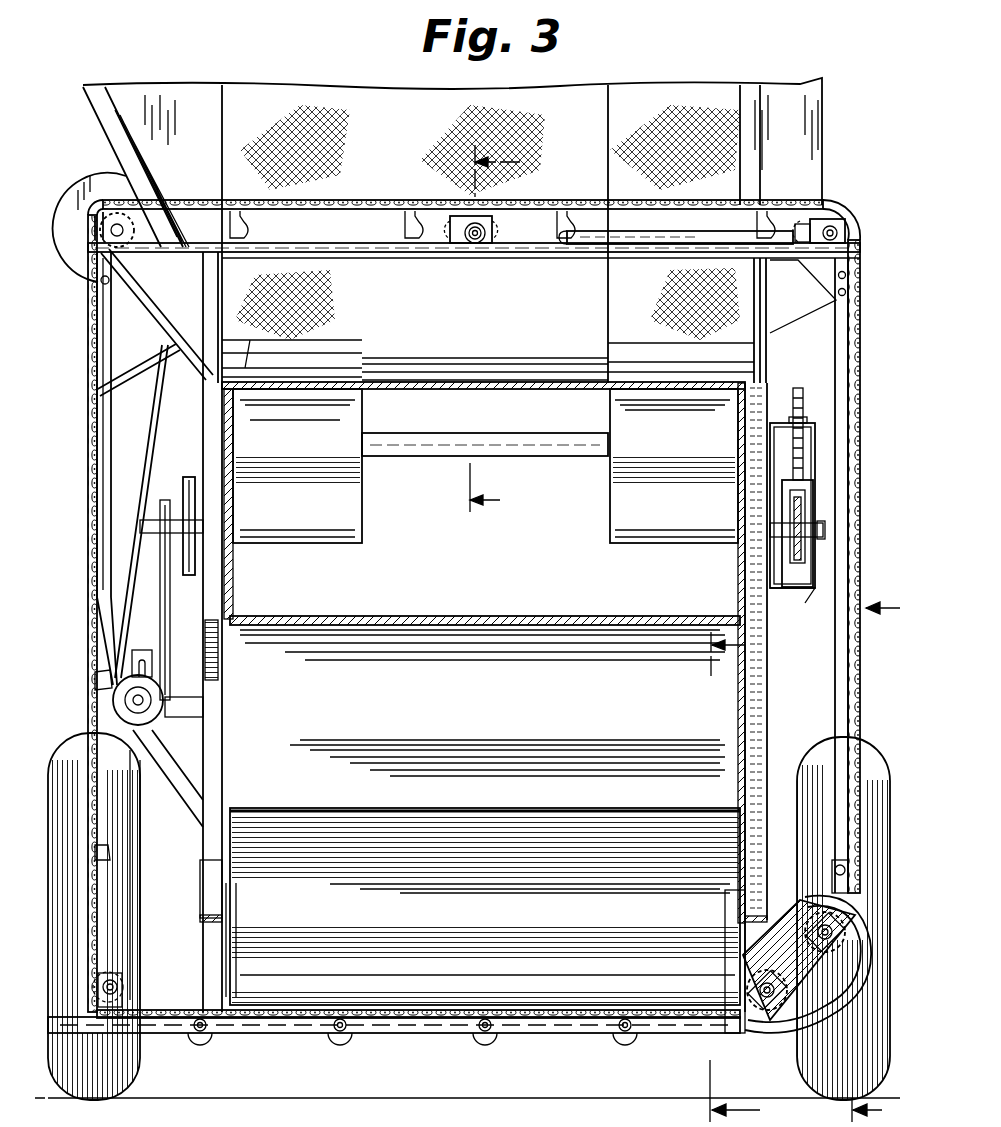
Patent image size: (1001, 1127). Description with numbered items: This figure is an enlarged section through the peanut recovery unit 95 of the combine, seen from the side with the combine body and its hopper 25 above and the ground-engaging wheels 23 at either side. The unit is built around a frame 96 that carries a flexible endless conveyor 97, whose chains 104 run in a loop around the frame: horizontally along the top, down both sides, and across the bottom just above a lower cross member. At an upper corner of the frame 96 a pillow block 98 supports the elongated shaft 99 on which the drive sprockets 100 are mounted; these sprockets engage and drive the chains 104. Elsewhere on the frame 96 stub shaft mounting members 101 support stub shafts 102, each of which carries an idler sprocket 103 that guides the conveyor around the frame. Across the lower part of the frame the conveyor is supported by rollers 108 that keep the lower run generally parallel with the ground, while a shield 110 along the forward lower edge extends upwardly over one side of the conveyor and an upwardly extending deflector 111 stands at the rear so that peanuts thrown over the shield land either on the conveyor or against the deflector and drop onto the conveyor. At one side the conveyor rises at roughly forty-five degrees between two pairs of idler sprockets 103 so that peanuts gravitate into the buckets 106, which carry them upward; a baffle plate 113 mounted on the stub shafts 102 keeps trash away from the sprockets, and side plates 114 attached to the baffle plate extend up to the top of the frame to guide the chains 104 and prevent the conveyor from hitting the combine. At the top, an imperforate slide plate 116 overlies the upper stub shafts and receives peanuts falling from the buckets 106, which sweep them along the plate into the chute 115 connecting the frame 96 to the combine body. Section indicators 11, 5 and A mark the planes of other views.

The hopper 25 is at (306, 100).
The endless conveyor 97 is at (377, 177).
The peanut recovery unit 95 is at (82, 548).
The frame 96 is at (386, 260).
The pillow blocks 98 is at (98, 208).
The shaft 99 is at (110, 203).
The drive sprockets 100 is at (155, 196).
The chains 104 is at (100, 443).
The buckets 106 is at (400, 222).
The idler sprockets 103 is at (495, 245).
The stub shaft 102 is at (868, 188).
The stub shaft mounting members 101 is at (892, 210).
The slide plate 116 is at (662, 238).
The section line 11- 11 is at (511, 331).
The chute 115 is at (440, 433).
The side plates 114 is at (845, 682).
The ground-engaging wheels 23 is at (872, 757).
The deflector 111 is at (582, 835).
The baffle plate 113 is at (755, 952).
The shield 110 is at (415, 1020).
The rollers 108 is at (487, 1036).
The section line 5- 5 is at (750, 879).
The section line A- A is at (876, 864).